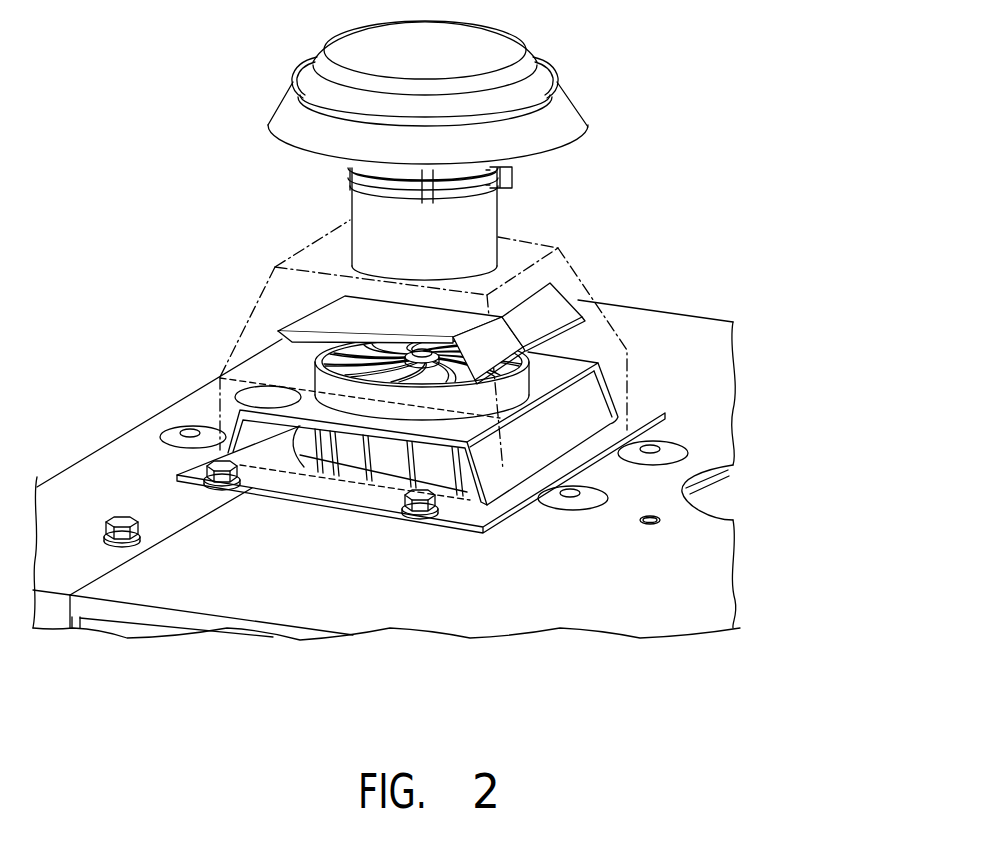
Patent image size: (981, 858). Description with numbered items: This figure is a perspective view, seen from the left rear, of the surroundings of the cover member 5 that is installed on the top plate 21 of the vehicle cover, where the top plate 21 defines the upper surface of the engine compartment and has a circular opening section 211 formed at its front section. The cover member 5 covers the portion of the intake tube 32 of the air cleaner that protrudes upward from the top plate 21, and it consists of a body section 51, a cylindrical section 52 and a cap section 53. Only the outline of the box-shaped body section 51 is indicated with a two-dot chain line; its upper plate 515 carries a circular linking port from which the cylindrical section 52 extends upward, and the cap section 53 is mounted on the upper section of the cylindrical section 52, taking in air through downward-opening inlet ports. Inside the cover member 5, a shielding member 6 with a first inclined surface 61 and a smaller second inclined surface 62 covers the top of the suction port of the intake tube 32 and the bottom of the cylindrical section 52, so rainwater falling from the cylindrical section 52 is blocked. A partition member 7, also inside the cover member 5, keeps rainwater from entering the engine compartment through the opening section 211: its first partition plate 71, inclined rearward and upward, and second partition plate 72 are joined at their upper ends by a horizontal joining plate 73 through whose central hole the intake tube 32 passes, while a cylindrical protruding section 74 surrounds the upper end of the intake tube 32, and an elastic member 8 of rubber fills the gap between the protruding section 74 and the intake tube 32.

The cover member 5 is at (591, 250).
The body section 51 is at (598, 270).
The upper plate 515 is at (538, 243).
The cylindrical section 52 is at (373, 215).
The cap section 53 is at (562, 103).
The shielding member 6 is at (320, 303).
The first inclined surface 61 is at (313, 333).
The second inclined surface 62 is at (582, 300).
The partition member 7 is at (527, 446).
The first partition plate 71 is at (247, 455).
The second partition plate 72 is at (567, 430).
The joining plate 73 is at (598, 362).
The protruding section 74 is at (362, 392).
The elastic member 8 is at (285, 345).
The top plate 21 is at (695, 330).
The opening section 211 is at (260, 423).
The intake tube 32 is at (392, 458).